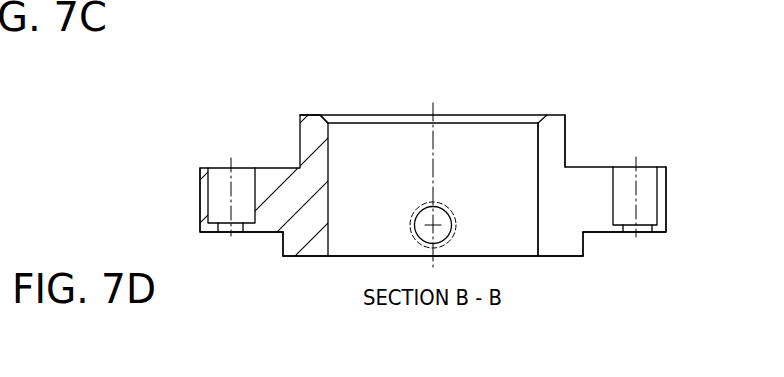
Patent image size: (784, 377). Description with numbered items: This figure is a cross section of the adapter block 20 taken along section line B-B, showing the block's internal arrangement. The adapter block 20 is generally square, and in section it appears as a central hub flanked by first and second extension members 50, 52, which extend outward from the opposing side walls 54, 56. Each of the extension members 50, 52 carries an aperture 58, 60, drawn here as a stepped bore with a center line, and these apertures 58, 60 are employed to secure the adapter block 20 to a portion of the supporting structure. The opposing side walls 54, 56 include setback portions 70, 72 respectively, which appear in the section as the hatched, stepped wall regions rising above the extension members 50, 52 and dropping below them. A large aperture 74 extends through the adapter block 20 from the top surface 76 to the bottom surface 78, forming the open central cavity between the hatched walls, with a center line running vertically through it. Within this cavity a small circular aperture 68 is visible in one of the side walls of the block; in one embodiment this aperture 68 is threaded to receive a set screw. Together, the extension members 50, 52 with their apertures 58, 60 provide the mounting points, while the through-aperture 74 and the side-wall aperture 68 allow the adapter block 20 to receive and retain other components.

The adapter block 20 is at (418, 60).
The first extension member 50 is at (666, 215).
The second extension member 52 is at (200, 190).
The side wall 54 is at (583, 240).
The side wall 56 is at (282, 248).
The aperture 58 is at (658, 197).
The aperture 60 is at (219, 182).
The aperture 68 is at (447, 224).
The setback portion 70 is at (567, 130).
The setback portion 72 is at (300, 140).
The aperture 74 is at (537, 143).
The top surface 76 is at (307, 114).
The bottom surface 78 is at (307, 258).